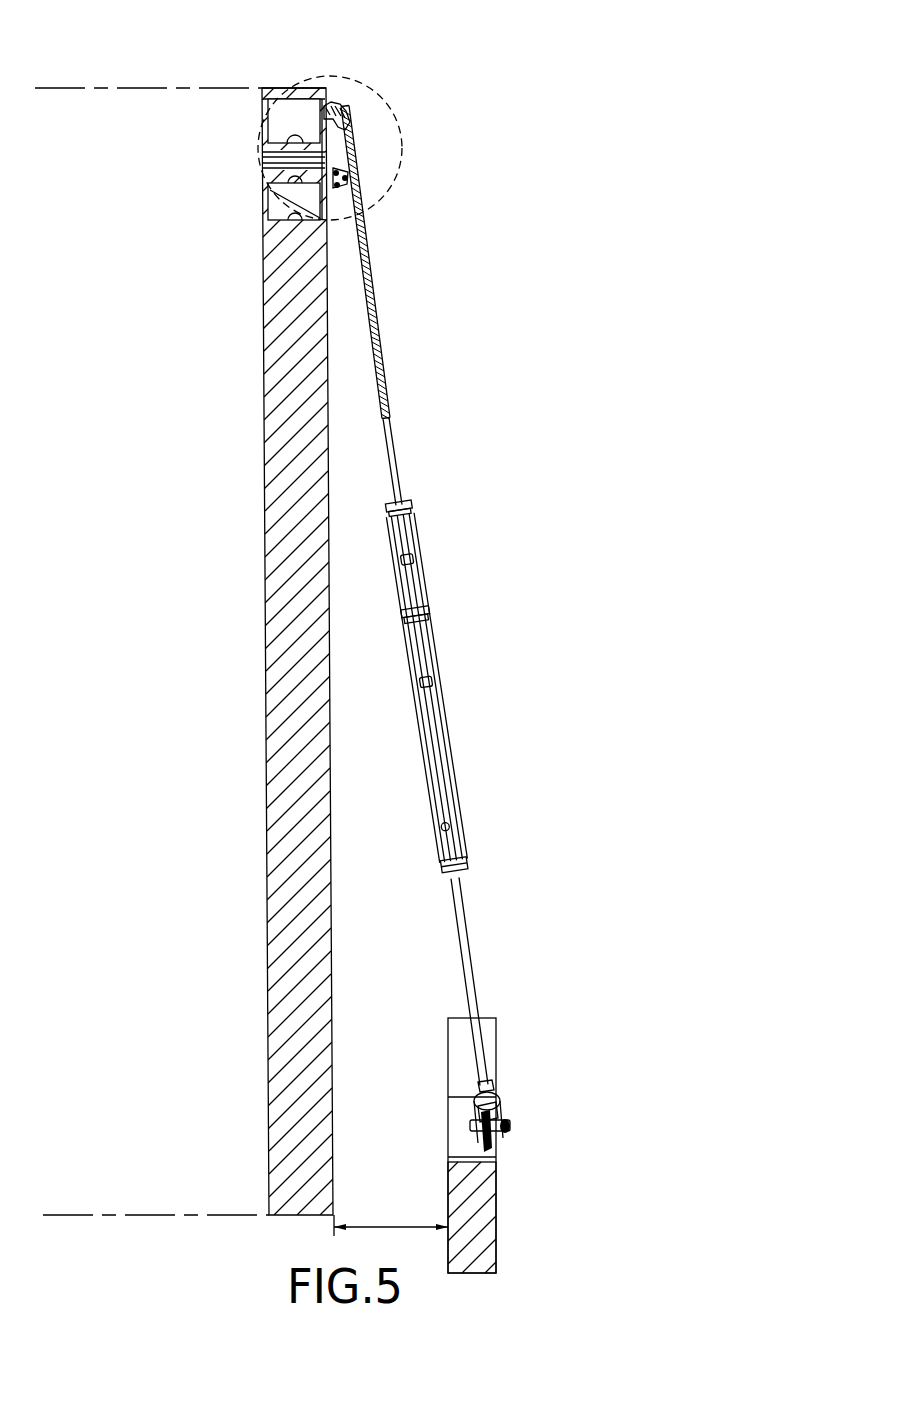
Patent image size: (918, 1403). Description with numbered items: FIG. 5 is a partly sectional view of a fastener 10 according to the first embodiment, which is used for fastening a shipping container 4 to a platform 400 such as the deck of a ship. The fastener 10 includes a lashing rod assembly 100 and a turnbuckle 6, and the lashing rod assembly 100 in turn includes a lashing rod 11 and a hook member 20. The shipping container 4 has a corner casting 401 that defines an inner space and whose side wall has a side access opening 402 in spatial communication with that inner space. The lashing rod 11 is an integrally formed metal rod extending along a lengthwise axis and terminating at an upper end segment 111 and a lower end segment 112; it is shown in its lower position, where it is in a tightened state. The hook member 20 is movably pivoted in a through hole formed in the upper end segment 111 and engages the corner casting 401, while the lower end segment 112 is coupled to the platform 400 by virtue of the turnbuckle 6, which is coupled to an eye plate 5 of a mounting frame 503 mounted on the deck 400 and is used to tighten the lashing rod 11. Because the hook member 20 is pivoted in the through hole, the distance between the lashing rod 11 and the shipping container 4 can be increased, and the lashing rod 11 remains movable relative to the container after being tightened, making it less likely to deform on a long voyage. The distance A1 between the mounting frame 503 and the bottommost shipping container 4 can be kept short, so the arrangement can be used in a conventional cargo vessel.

The fastener 10 is at (590, 190).
The shipping container 4 is at (145, 1223).
The corner casting 401 is at (276, 91).
The hook member 20 is at (295, 120).
The lashing rod assembly 100 is at (355, 76).
The side access opening 402 is at (337, 106).
The lashing rod 11 is at (497, 241).
The upper end segment 111 is at (357, 206).
The lower end segment 112 is at (393, 458).
The turnbuckle 6 is at (488, 739).
The platform 400 is at (517, 1029).
The mounting frame 503 is at (490, 1207).
The eye plate 5 is at (503, 1105).
The distance A1 is at (391, 1217).